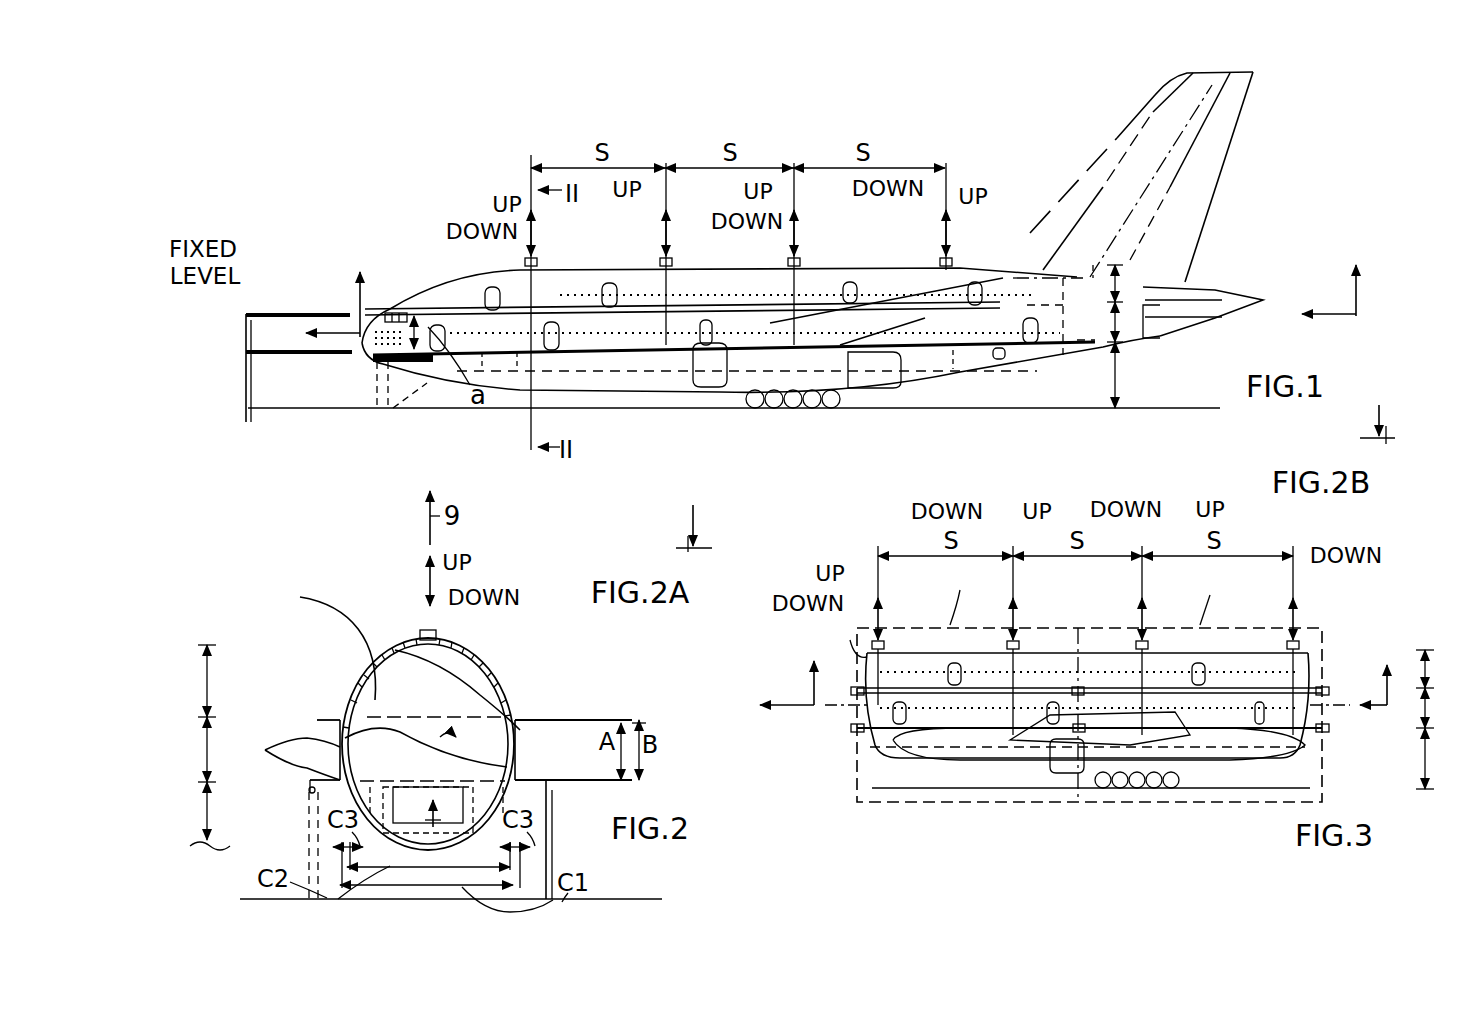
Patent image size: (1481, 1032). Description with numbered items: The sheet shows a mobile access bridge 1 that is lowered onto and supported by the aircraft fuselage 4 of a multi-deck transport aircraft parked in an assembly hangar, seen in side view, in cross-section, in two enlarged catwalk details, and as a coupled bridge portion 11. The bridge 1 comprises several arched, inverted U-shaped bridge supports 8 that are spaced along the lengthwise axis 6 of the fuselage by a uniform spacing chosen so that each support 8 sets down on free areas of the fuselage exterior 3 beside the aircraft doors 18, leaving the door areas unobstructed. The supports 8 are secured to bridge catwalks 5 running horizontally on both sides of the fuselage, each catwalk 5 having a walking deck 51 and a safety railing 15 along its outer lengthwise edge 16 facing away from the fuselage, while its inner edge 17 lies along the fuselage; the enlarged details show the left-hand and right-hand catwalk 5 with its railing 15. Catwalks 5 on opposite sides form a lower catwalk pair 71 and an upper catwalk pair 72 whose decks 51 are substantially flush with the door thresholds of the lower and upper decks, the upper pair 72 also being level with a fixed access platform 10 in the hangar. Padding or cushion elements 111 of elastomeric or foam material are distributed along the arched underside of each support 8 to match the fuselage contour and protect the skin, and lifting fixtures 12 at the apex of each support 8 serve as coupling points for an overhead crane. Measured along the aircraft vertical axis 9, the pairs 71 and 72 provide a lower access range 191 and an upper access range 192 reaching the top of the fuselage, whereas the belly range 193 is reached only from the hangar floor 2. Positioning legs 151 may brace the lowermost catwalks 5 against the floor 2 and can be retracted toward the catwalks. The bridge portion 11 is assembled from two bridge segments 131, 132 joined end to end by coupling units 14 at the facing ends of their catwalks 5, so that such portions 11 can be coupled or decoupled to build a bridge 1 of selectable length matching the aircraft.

In FIG. 1, the access bridge 1 is at (443, 197).
In FIG. 1, the floor 2 is at (847, 411).
In FIG. 2, the floor 2 is at (614, 901).
In FIG. 3, the floor 2 is at (1185, 805).
In FIG. 1, the fuselage exterior 3 is at (730, 315).
In FIG. 2, the fuselage exterior 3 is at (466, 652).
In FIG. 3, the fuselage exterior 3 is at (1089, 691).
In FIG. 1, the aircraft fuselage 4 is at (590, 270).
In FIG. 2, the aircraft fuselage 4 is at (360, 777).
In FIG. 3, the aircraft fuselage 4 is at (1063, 652).
In FIG. 1, the bridge catwalk 5 is at (432, 301).
In FIG. 2B, the bridge catwalk 5 is at (1377, 459).
In FIG. 2A, the bridge catwalk 5 is at (694, 568).
In FIG. 2, the bridge catwalk 5 is at (340, 705).
In FIG. 3, the bridge catwalk 5 is at (963, 662).
In FIG. 1, the lengthwise axis 6 is at (335, 338).
In FIG. 2, the lengthwise axis 6 is at (450, 748).
In FIG. 3, the lengthwise axis 6 is at (1070, 687).
In FIG. 1, the bridge support 8 is at (490, 304).
In FIG. 2, the bridge support 8 is at (426, 719).
In FIG. 3, the bridge support 8 is at (985, 652).
In FIG. 1, the aircraft vertical axis 9 is at (360, 290).
In FIG. 2, the aircraft vertical axis 9 is at (436, 810).
In FIG. 3, the aircraft vertical axis 9 is at (1087, 677).
In FIG. 1, the fixed access platform 10 is at (294, 300).
In FIG. 3, the bridge portion 11 is at (1366, 588).
In FIG. 1, the carrying element 12 is at (535, 260).
In FIG. 2, the carrying element 12 is at (437, 636).
In FIG. 3, the carrying element 12 is at (882, 638).
In FIG. 3, the coupling unit 14 is at (1085, 651).
In FIG. 2B, the safety railing 15 is at (1388, 432).
In FIG. 2A, the safety railing 15 is at (685, 540).
In FIG. 2, the safety railing 15 is at (330, 718).
In FIG. 2B, the lengthwise edge 16 is at (1391, 440).
In FIG. 2A, the lengthwise edge 16 is at (688, 549).
In FIG. 2, the lengthwise edge 16 is at (318, 719).
In FIG. 2B, the inner edge 17 is at (1363, 439).
In FIG. 2A, the inner edge 17 is at (709, 549).
In FIG. 1, the aircraft door 18 is at (492, 314).
In FIG. 3, the aircraft door 18 is at (950, 662).
In FIG. 1, the walking deck 51 is at (323, 312).
In FIG. 2B, the walking deck 51 is at (1375, 405).
In FIG. 2A, the walking deck 51 is at (692, 511).
In FIG. 2, the walking deck 51 is at (330, 714).
In FIG. 2, the lower catwalk pair 71 is at (284, 751).
In FIG. 2, the upper catwalk pair 72 is at (300, 597).
In FIG. 2, the padding element 111 is at (365, 653).
In FIG. 3, the bridge segment 131 is at (953, 578).
In FIG. 3, the bridge segment 132 is at (1222, 582).
In FIG. 1, the positioning leg 151 is at (376, 395).
In FIG. 2, the positioning leg 151 is at (306, 821).
In FIG. 1, the lower access range 191 is at (1120, 328).
In FIG. 2, the lower access range 191 is at (185, 749).
In FIG. 3, the lower access range 191 is at (1447, 708).
In FIG. 1, the upper access range 192 is at (1127, 282).
In FIG. 2, the upper access range 192 is at (185, 681).
In FIG. 3, the upper access range 192 is at (1448, 669).
In FIG. 1, the belly range 193 is at (1113, 400).
In FIG. 2, the belly range 193 is at (192, 816).
In FIG. 3, the belly range 193 is at (1448, 758).